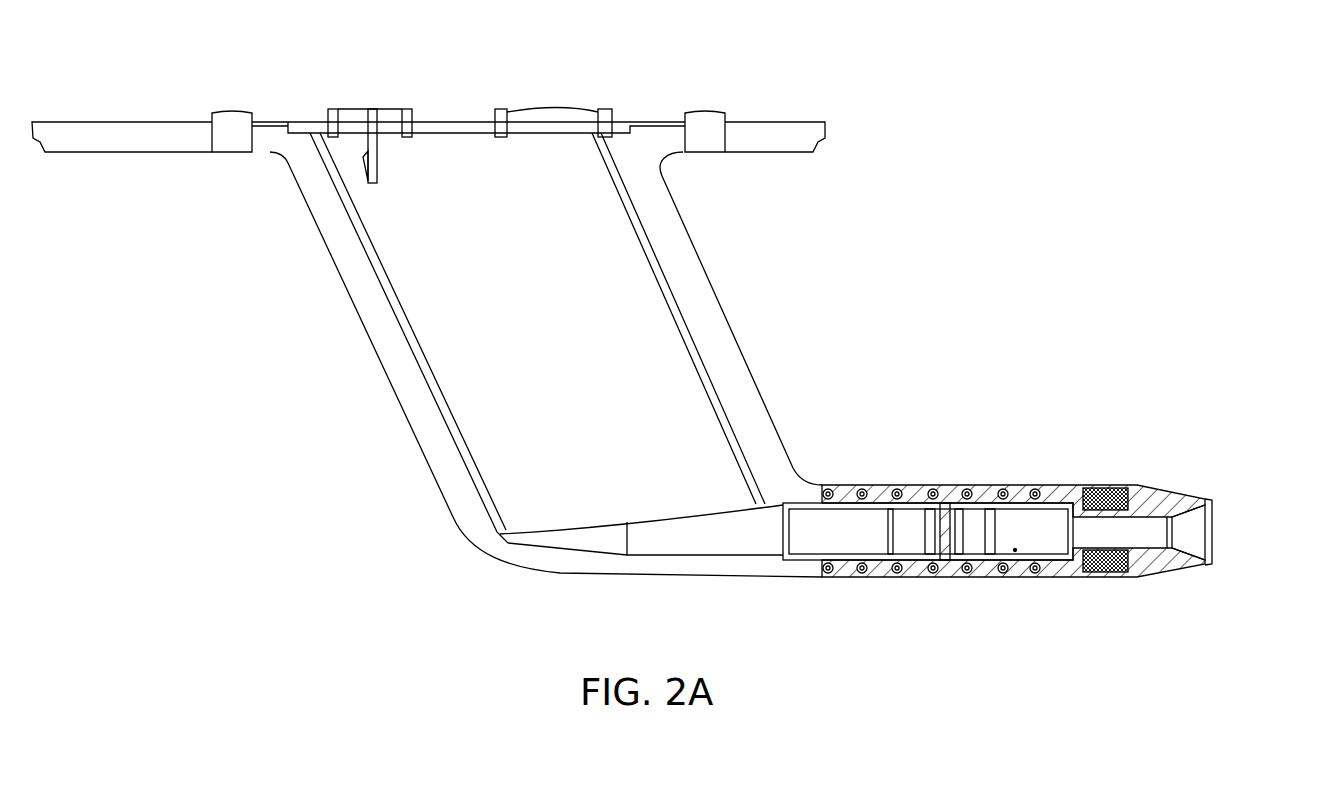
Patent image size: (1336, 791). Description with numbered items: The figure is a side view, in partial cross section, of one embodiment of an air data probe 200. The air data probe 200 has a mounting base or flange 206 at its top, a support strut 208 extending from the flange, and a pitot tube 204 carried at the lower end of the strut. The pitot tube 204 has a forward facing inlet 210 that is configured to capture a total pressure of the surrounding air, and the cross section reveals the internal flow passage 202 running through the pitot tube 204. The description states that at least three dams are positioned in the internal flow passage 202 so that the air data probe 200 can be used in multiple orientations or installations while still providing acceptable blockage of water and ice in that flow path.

The air data probe 200 is at (993, 288).
The internal flow passage 202 is at (1047, 522).
The pitot tube 204 is at (1147, 578).
The mounting base or flange 206 is at (148, 154).
The support strut 208 is at (735, 310).
The forward facing inlet 210 is at (1226, 532).